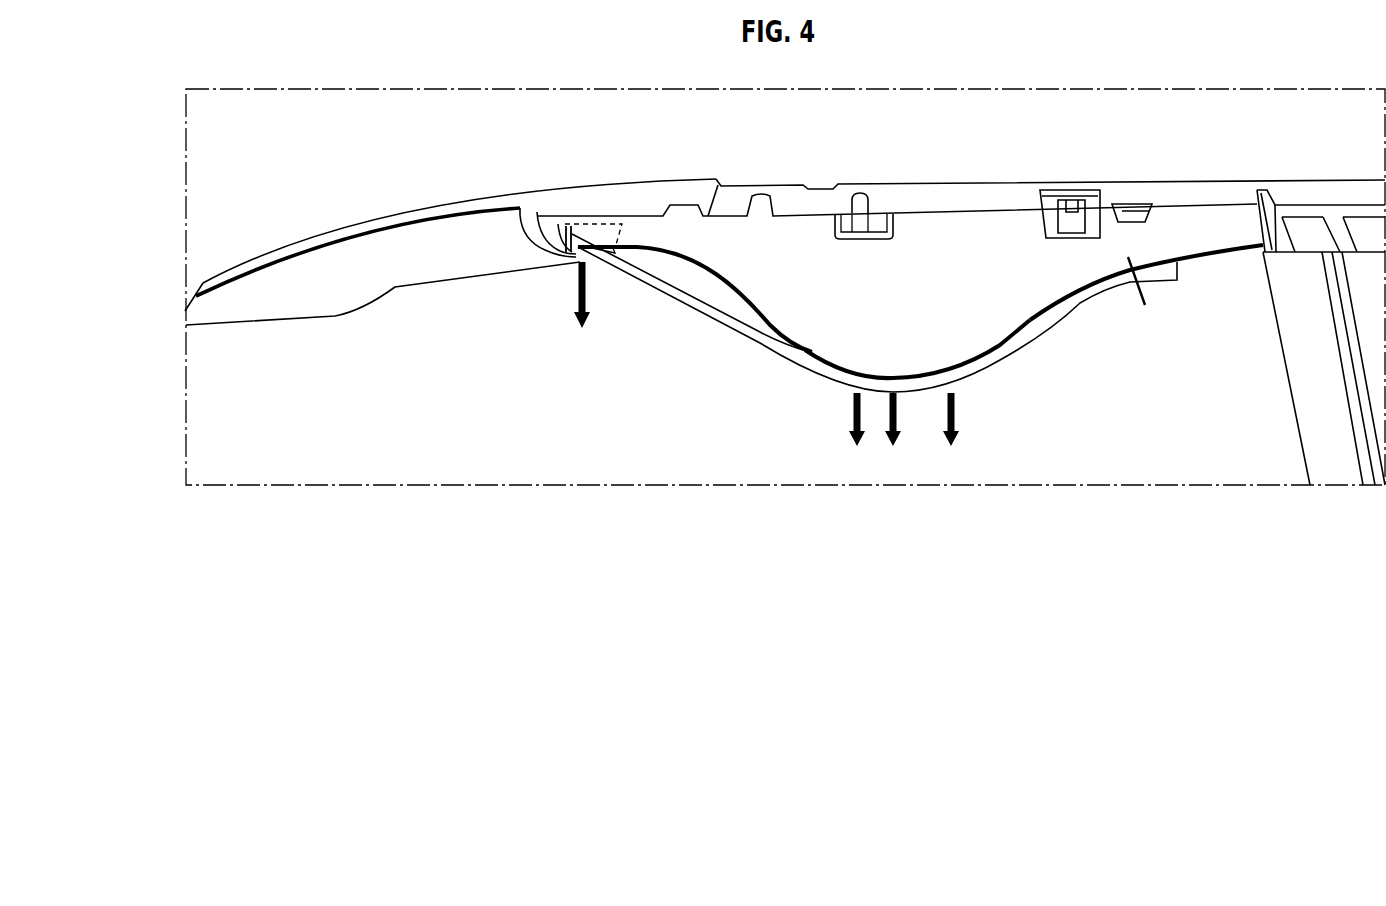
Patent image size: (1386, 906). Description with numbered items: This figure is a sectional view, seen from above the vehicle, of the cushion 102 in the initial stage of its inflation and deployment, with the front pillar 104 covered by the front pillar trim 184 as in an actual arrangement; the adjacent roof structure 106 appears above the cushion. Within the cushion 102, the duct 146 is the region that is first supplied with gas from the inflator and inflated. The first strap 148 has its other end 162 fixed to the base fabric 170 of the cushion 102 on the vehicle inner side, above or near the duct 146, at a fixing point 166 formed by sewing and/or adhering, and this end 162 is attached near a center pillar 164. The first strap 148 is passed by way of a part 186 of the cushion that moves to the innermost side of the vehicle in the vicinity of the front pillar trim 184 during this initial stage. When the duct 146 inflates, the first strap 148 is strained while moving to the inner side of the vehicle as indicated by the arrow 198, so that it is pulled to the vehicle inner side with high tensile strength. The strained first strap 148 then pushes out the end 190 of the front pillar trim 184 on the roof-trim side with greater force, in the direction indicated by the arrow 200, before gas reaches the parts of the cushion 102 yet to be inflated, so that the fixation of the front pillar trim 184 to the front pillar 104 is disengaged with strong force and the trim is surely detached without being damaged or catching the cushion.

The cushion 102 is at (1173, 242).
The front pillar 104 is at (583, 203).
The roof reinforcement panel 106 is at (1005, 195).
The duct 146 is at (955, 268).
The first strap 148 is at (681, 297).
The other end of the first strap 162 is at (1180, 283).
The center pillar 164 is at (1290, 268).
The fixing point 166 is at (1137, 297).
The base fabric 170 is at (760, 291).
The front pillar trim 184 is at (477, 258).
The part 186 is at (888, 372).
The end of the front pillar trim 190 is at (562, 262).
The arrow 198 is at (888, 418).
The arrow 200 is at (588, 290).